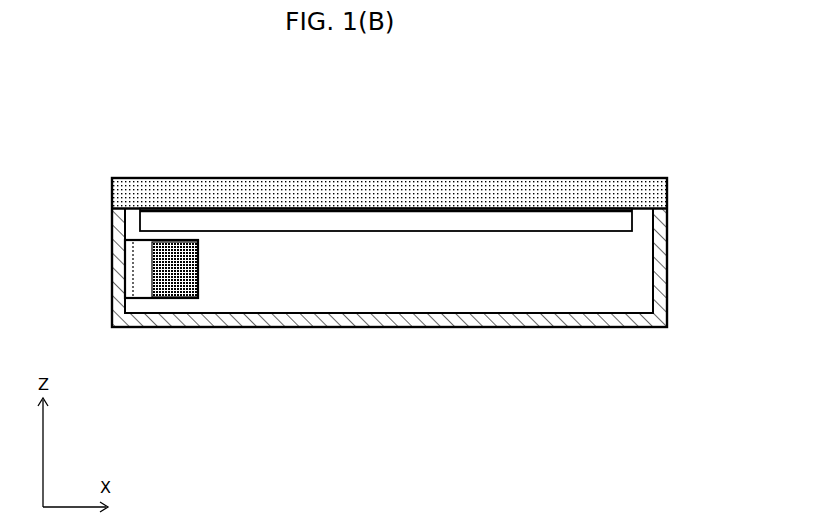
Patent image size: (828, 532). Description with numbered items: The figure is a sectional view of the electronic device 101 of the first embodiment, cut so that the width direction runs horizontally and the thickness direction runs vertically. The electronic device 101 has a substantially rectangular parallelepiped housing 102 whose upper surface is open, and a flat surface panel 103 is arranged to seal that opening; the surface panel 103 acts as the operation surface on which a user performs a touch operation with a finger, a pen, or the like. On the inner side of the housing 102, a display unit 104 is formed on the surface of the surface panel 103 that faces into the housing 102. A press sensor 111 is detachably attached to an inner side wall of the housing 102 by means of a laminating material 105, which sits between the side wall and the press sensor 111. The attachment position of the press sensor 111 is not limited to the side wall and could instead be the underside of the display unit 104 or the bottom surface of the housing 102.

The electronic device 101 is at (350, 290).
The housing 102 is at (348, 330).
The surface panel 103 is at (607, 178).
The display unit 104 is at (382, 210).
The laminating material 105 is at (113, 338).
The press sensor 111 is at (172, 299).